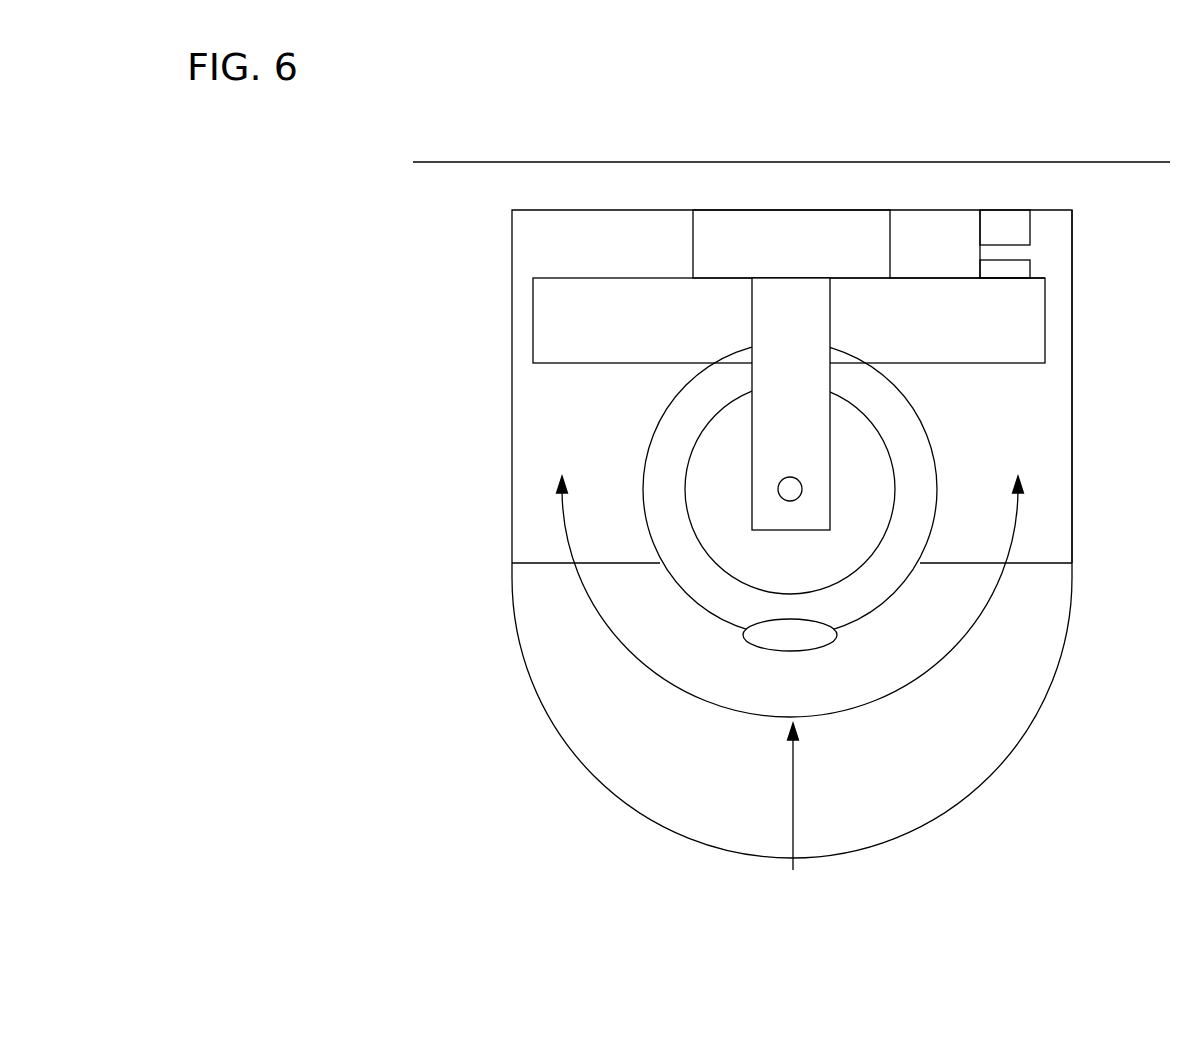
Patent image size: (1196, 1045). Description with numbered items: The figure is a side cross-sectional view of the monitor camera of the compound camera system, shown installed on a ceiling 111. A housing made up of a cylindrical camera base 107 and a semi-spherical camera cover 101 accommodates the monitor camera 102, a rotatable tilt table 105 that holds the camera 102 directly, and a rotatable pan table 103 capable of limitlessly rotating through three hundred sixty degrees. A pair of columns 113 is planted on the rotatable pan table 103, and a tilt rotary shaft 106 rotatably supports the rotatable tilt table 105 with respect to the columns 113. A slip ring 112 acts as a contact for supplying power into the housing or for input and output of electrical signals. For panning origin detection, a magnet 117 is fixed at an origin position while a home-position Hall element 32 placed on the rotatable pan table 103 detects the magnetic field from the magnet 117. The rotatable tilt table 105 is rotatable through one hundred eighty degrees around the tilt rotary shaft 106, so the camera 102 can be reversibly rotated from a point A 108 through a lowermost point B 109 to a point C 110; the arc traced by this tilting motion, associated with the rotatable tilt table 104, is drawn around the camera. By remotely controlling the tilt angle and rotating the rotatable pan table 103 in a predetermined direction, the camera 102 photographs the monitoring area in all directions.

The home-position Hall element 32 is at (1033, 267).
The camera cover 101 is at (547, 760).
The monitor camera 102 is at (831, 663).
The rotatable pan table 103 is at (631, 305).
The rotatable tilt table 104 is at (977, 636).
The rotatable tilt table 105 is at (943, 432).
The tilt rotary shaft 106 is at (806, 469).
The camera base 107 is at (1078, 399).
The point A 108 is at (545, 463).
The lowermost point B 109 is at (782, 813).
The point C 110 is at (1041, 468).
The ceiling 111 is at (791, 145).
The slip ring 112 is at (782, 228).
The columns 113 is at (787, 310).
The magnet 117 is at (1033, 228).